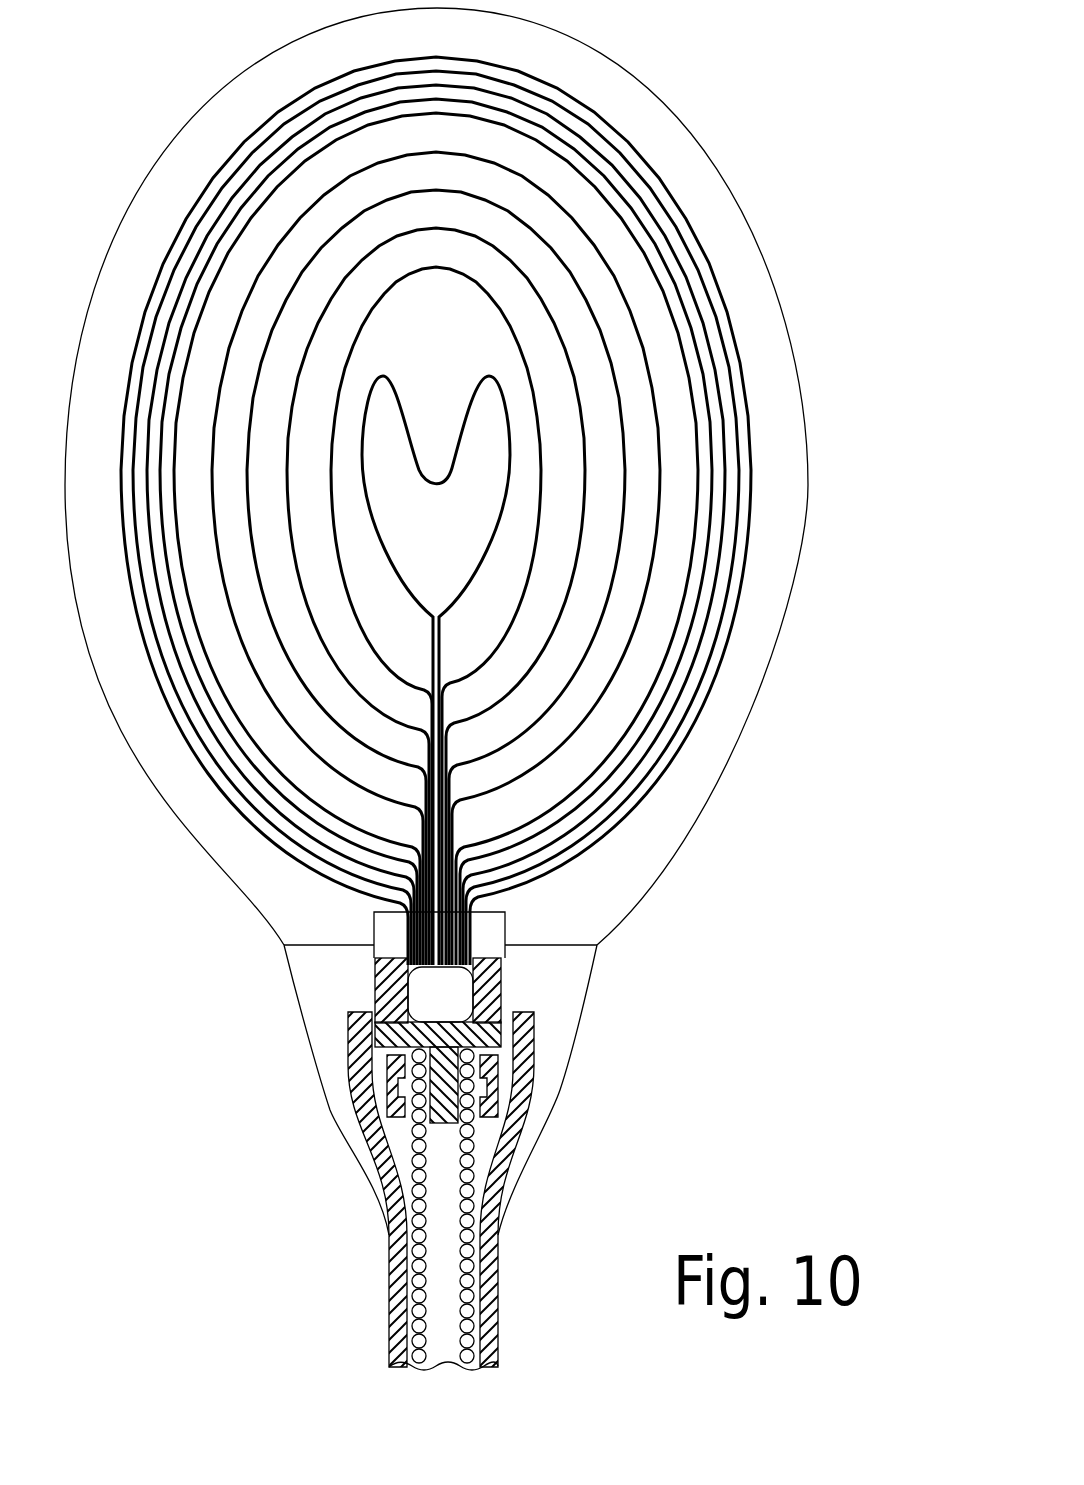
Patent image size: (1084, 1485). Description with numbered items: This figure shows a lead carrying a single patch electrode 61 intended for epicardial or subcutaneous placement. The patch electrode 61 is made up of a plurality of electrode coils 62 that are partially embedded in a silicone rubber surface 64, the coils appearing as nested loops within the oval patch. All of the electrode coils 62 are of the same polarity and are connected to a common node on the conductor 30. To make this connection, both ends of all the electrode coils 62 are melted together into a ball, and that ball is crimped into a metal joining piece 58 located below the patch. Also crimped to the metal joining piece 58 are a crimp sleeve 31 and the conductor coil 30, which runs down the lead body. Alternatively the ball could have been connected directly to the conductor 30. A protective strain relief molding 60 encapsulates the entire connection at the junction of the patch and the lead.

The silicone rubber surface 64 is at (773, 394).
The patch electrode 61 is at (521, 511).
The electrode coils 62 is at (505, 509).
The metal joining piece 58 is at (490, 1027).
The crimp sleeve 31 is at (498, 1067).
The protective strain relief molding 60 is at (345, 1118).
The conductor coil 30 is at (490, 1273).